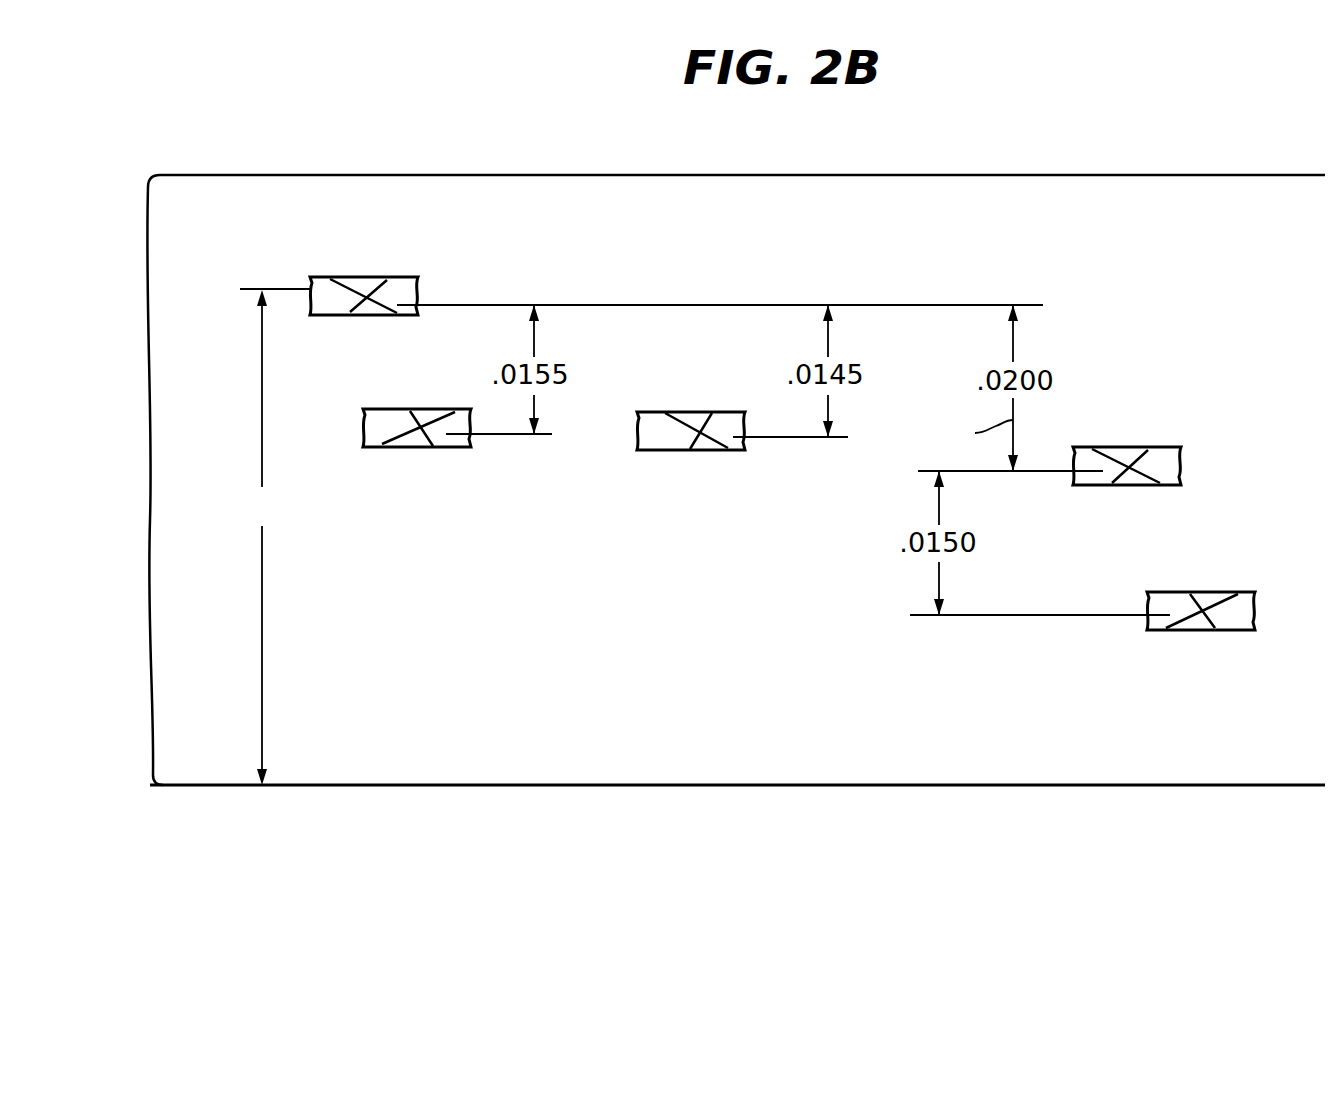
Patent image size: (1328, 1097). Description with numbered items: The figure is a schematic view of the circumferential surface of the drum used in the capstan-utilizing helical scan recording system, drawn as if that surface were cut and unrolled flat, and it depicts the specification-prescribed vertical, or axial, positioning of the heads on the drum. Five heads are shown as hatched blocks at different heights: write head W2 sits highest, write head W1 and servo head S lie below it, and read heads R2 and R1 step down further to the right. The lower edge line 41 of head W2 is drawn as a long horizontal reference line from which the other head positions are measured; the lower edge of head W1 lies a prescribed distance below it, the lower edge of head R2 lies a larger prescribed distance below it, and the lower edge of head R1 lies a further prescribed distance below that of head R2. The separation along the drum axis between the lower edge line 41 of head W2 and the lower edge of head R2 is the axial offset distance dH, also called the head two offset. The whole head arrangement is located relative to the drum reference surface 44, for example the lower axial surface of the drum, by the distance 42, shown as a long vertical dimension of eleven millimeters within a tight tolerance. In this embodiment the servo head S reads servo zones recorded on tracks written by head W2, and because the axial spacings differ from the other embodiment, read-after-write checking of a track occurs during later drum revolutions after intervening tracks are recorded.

The lower edge line of head W2 41 is at (722, 305).
The distance 42 is at (262, 622).
The drum reference surface 44 is at (758, 785).
The head W1 is at (457, 411).
The head W2 is at (364, 280).
The servo head S is at (742, 413).
The head R1 is at (1082, 594).
The head R2 is at (1049, 450).
The axial offset distance dH is at (966, 433).